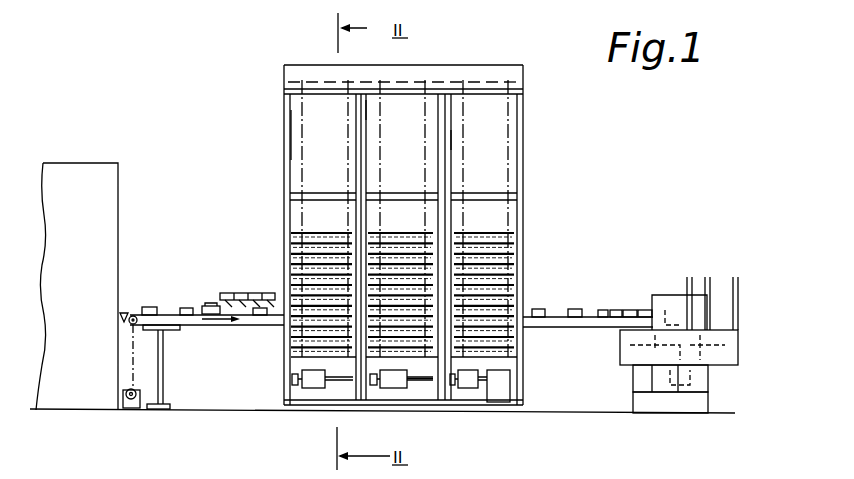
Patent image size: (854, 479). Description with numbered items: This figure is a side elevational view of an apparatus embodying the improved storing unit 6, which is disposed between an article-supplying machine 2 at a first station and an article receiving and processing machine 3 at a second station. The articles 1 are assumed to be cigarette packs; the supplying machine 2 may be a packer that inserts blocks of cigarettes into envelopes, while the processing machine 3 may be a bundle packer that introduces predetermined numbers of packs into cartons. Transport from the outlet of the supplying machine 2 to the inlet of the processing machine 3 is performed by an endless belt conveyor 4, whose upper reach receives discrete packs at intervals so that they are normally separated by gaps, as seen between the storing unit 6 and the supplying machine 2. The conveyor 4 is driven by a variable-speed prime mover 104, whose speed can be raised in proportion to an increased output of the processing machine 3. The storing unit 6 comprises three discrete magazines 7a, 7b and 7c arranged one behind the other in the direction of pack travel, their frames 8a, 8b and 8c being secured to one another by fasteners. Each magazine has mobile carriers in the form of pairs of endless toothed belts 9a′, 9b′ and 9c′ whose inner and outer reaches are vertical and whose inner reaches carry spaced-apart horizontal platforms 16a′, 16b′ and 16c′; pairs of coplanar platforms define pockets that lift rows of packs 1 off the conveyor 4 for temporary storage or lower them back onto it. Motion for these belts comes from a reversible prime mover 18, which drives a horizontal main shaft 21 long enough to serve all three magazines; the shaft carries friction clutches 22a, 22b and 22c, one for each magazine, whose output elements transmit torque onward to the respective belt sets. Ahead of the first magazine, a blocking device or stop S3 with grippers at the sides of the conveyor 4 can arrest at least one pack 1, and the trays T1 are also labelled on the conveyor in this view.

The articles 1 is at (182, 307).
The article-supplying machine 2 is at (90, 262).
The article receiving and processing machine 3 is at (713, 236).
The endless belt conveyor 4 is at (163, 313).
The storing unit 6 is at (514, 45).
The first magazine 7a is at (320, 107).
The second magazine 7b is at (410, 103).
The third magazine 7c is at (485, 108).
The frame of first magazine 8a is at (285, 162).
The frame of second magazine 8b is at (437, 107).
The frame of third magazine 8c is at (517, 140).
The endless toothed conveying belts 9a′ is at (350, 145).
The endless toothed conveying belts 9b′ is at (425, 120).
The endless toothed conveying belts 9c′ is at (505, 172).
The platforms 16a′ is at (315, 228).
The platforms 16b′ is at (404, 240).
The platforms 16c′ is at (492, 235).
The reversible prime mover 18 is at (500, 395).
The main shaft 21 is at (422, 380).
The friction clutch 22a is at (310, 382).
The friction clutch 22b is at (390, 382).
The friction clutch 22c is at (470, 383).
The variable-speed prime mover 104 is at (140, 403).
The third blocking device S3 is at (210, 296).
The trays T1...T4 T1 is at (241, 283).